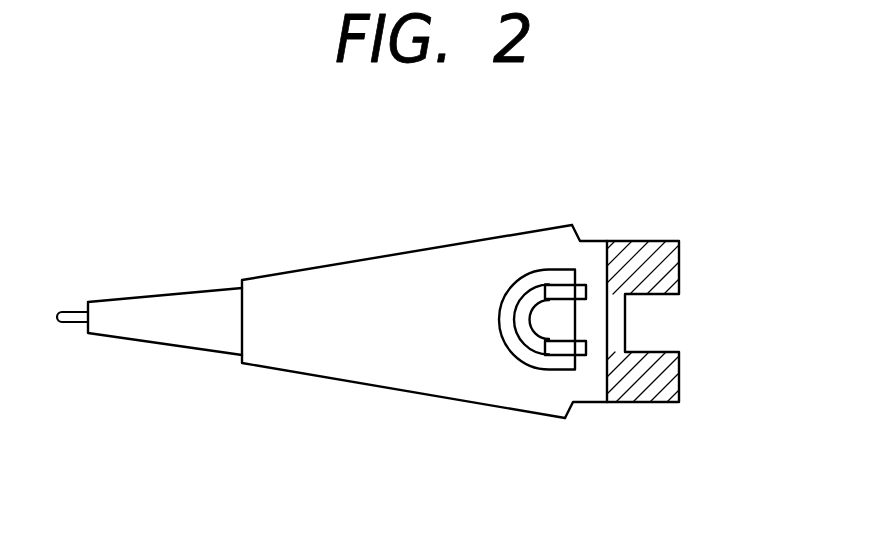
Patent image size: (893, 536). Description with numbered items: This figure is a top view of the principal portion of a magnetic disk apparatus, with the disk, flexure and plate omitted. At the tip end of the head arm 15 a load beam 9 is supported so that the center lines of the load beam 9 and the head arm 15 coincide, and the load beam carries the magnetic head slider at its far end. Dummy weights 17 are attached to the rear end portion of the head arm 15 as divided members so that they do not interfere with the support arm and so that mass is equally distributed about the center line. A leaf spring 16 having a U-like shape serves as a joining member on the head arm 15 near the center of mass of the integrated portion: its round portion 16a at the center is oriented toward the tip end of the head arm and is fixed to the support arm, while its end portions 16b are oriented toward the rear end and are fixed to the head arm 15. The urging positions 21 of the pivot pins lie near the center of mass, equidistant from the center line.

The load beam 9 is at (172, 328).
The head arm 15 is at (320, 353).
The leaf spring 16 is at (517, 273).
The round portion 16a is at (521, 316).
The end portions 16b is at (581, 284).
The dummy weights 17 is at (665, 271).
The urging positions 21 is at (563, 243).